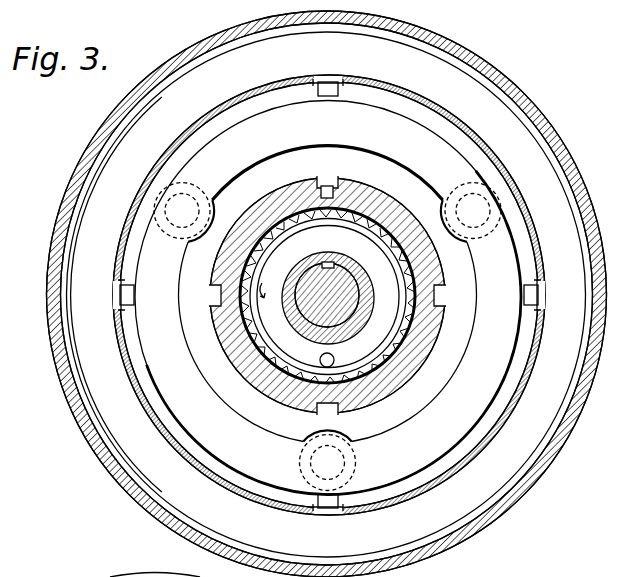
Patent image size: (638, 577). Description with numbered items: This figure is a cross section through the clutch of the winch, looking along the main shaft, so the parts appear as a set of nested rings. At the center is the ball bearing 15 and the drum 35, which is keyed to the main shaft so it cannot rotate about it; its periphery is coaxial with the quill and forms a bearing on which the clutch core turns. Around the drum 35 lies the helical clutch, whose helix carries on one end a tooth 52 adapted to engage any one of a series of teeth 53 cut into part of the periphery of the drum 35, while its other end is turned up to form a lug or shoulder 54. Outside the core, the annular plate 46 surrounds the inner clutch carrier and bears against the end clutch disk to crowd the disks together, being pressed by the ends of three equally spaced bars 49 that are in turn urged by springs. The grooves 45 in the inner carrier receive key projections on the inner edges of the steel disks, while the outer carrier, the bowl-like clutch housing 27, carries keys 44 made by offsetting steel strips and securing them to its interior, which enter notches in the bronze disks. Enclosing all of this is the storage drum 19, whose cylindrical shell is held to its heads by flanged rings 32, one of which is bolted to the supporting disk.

The ball bearing 15 is at (358, 292).
The storage drum 19 is at (480, 527).
The clutch housing 27 is at (508, 420).
The flanged rings 32 is at (523, 473).
The drum 35 is at (222, 345).
The keys 44 is at (322, 98).
The grooves 45 is at (318, 177).
The annular plate 46 is at (452, 434).
The bars 49 is at (170, 223).
The tooth 52 is at (338, 378).
The teeth 53 is at (368, 366).
The lug or shoulder 54 is at (333, 180).